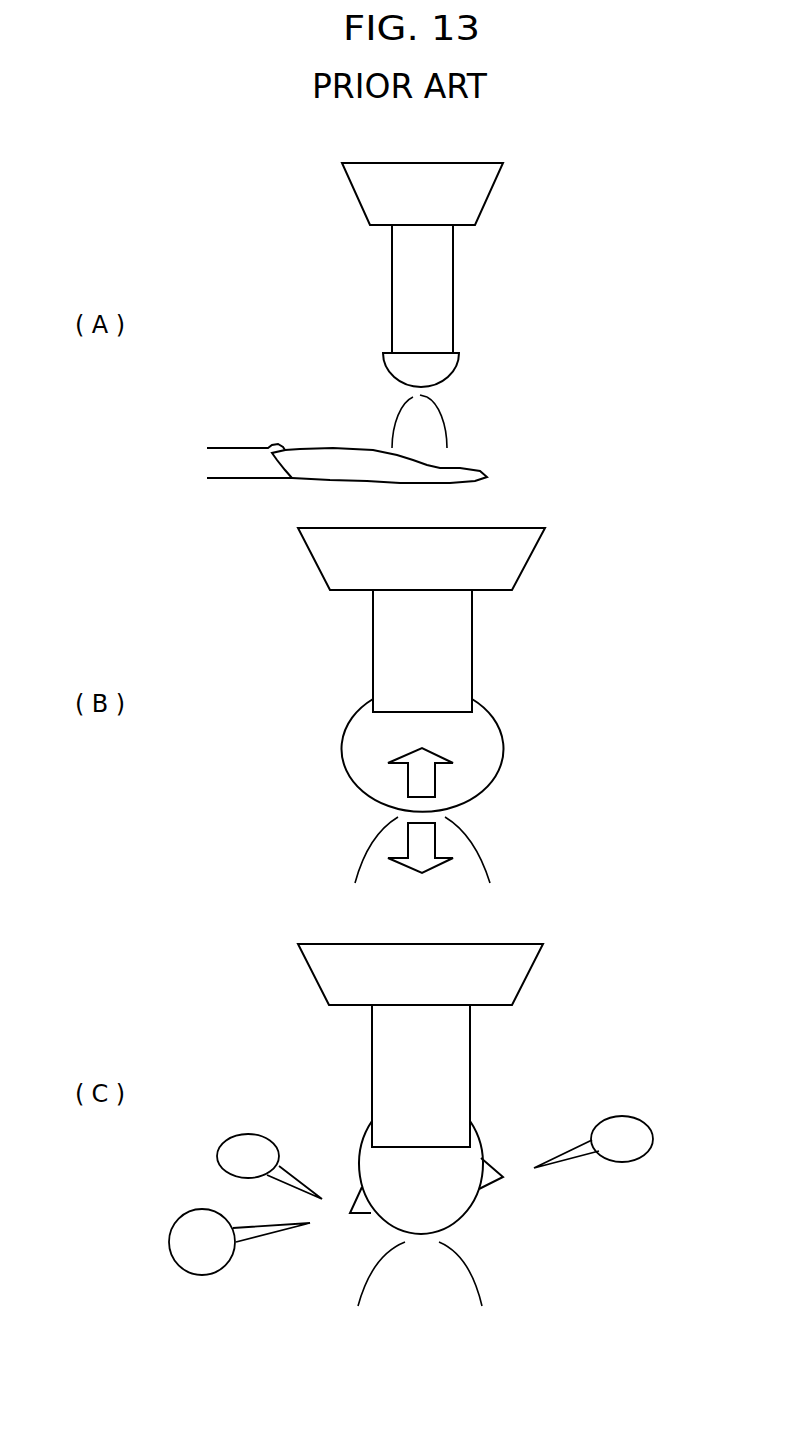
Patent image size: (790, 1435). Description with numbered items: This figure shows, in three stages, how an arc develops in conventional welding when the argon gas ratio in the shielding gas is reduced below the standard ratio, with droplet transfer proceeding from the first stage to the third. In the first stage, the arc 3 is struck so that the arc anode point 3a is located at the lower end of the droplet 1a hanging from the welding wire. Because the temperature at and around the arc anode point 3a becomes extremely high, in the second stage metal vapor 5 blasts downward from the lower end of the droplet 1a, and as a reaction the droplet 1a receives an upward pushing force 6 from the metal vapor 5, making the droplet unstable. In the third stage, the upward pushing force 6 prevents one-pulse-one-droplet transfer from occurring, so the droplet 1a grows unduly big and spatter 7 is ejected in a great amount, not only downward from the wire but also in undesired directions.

The droplet 1a is at (458, 372).
The arc 3 is at (447, 437).
The arc anode point 3a is at (423, 394).
The metal vapor 5 is at (437, 840).
The upward pushing force 6 is at (435, 778).
The spatter 7 is at (617, 1116).